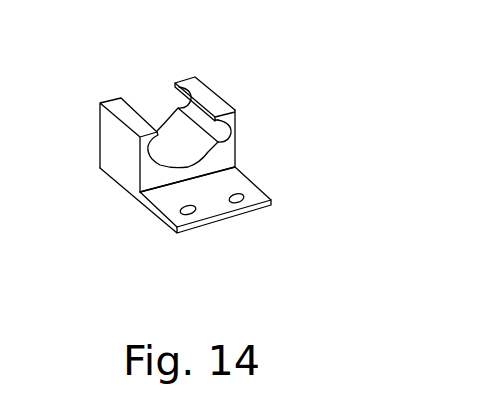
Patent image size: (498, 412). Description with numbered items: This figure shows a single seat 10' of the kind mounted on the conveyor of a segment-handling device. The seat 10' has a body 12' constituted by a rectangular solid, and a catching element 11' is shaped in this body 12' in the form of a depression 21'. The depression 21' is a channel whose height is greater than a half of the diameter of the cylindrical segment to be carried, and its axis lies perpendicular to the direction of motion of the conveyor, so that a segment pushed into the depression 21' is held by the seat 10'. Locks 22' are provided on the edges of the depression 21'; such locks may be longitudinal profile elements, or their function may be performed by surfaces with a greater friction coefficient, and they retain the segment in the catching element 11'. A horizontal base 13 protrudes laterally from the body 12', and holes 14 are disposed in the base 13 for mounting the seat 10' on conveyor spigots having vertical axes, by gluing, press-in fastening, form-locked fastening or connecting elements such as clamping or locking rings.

The seat 10' is at (151, 223).
The catching element 11' is at (143, 100).
The body 12' is at (78, 145).
The base 13 is at (273, 205).
The holes 14 is at (190, 212).
The depression 21' is at (236, 127).
The locks 22' is at (236, 67).